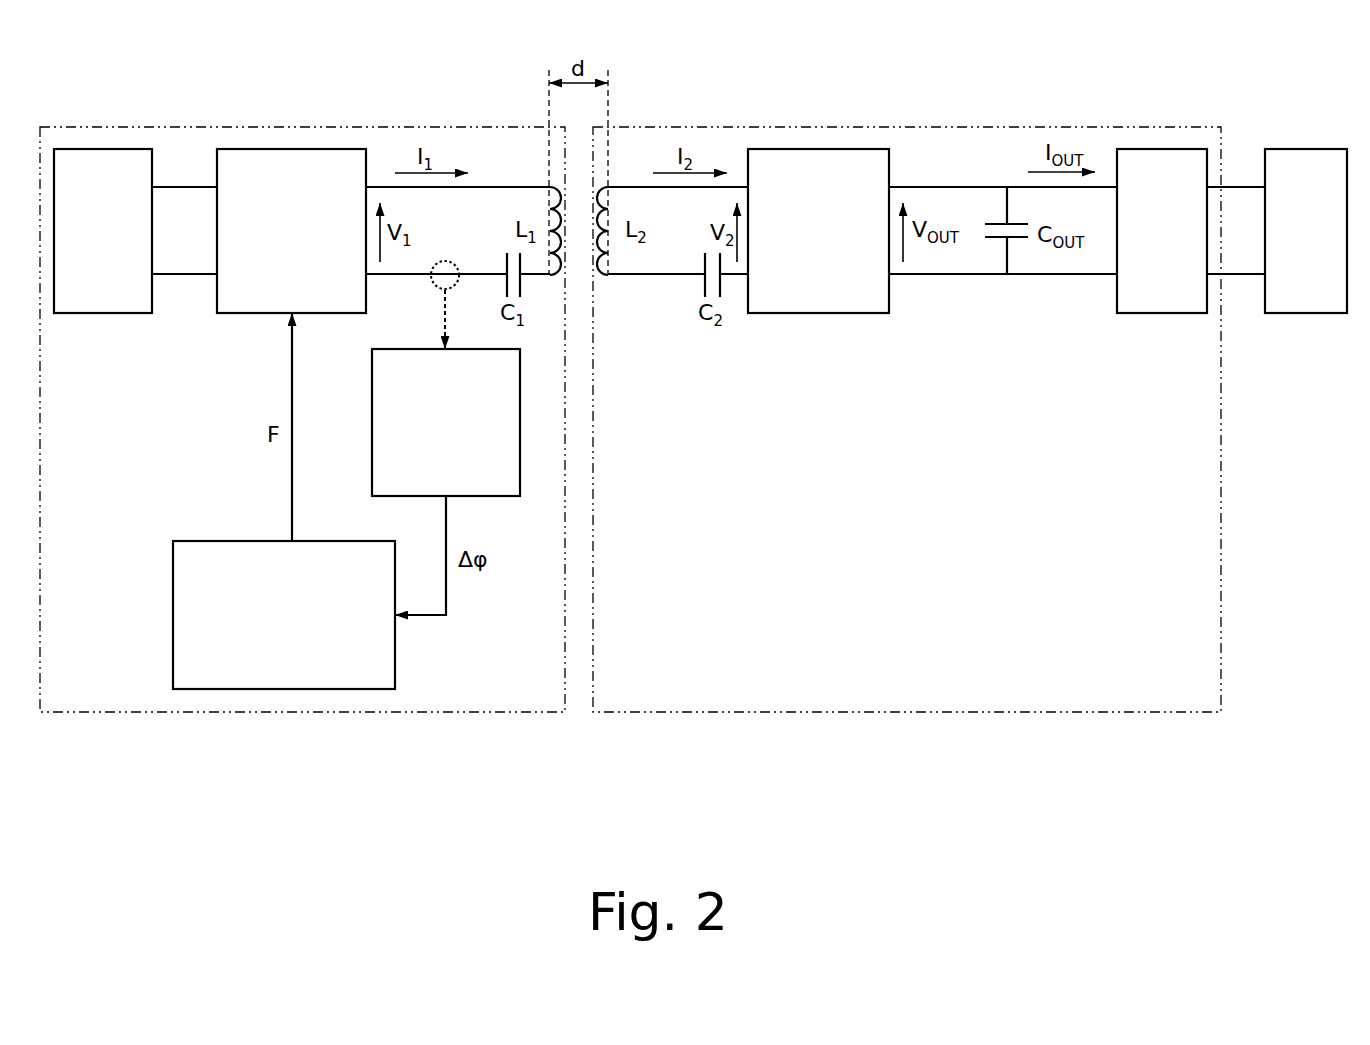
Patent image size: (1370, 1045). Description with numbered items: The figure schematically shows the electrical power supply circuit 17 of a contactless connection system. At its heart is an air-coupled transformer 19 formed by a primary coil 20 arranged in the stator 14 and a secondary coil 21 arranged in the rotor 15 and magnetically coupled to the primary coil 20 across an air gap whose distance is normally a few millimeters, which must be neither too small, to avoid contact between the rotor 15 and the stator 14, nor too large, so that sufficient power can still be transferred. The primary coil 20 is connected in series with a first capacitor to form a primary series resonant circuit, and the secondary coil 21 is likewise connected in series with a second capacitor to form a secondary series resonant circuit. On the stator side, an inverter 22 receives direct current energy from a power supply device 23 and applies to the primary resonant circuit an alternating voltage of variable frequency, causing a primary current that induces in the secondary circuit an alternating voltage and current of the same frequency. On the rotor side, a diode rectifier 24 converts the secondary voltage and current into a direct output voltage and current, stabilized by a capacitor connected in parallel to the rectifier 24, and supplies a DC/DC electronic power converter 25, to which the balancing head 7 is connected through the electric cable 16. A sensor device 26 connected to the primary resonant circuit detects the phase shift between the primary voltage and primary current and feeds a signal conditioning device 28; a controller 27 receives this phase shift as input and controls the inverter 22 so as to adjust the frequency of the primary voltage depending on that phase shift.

The balancing head 7 is at (1306, 231).
The stator 14 is at (365, 712).
The rotor 15 is at (977, 712).
The electric cable 16 is at (1236, 163).
The electrical power supply circuit 17 is at (1162, 860).
The air-coupled transformer 19 is at (580, 313).
The primary coil 20 is at (543, 207).
The secondary coil 21 is at (613, 207).
The inverter 22 is at (291, 231).
The power supply device 23 is at (103, 231).
The diode rectifier 24 is at (818, 231).
The DC/DC electronic power converter 25 is at (1162, 231).
The sensor device 26 is at (434, 287).
The controller 27 is at (284, 615).
The signal conditioning device 28 is at (446, 422).